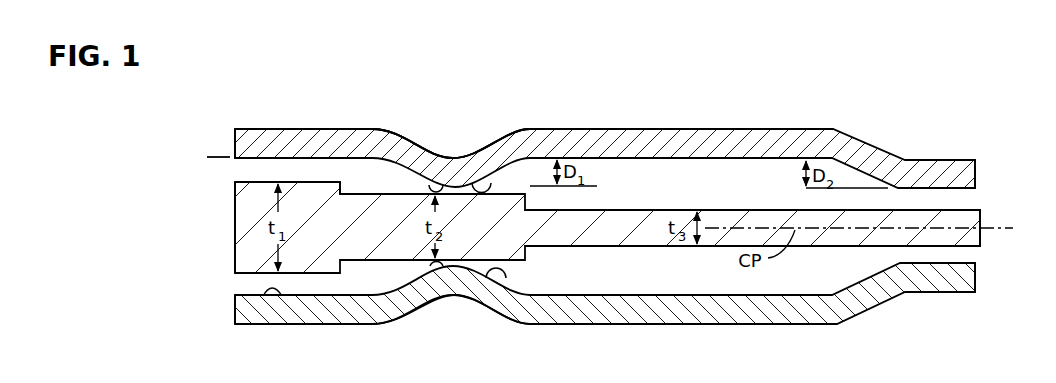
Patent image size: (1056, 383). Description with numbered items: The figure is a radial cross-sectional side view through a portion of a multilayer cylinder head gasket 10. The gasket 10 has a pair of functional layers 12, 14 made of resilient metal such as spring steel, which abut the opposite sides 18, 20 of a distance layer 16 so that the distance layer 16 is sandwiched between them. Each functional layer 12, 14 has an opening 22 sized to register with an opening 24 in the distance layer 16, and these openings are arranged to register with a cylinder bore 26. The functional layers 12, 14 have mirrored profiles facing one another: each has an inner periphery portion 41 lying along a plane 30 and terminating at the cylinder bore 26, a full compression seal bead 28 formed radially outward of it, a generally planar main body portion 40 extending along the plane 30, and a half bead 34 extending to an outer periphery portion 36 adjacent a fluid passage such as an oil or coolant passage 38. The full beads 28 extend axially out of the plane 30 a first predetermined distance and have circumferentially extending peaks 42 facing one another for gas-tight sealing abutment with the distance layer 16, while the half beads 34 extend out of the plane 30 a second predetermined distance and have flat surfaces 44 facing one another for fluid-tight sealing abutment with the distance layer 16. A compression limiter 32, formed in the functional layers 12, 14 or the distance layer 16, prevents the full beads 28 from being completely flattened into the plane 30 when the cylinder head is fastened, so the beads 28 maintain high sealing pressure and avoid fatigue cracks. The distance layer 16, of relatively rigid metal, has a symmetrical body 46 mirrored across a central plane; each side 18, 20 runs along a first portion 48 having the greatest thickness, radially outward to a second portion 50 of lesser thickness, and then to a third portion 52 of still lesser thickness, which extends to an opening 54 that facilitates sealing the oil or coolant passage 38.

The gasket 10 is at (802, 90).
The functional layer 12 is at (277, 129).
The functional layer 14 is at (288, 326).
The distance layer 16 is at (235, 208).
The side of distance layer 18 is at (254, 181).
The side of distance layer 20 is at (255, 276).
The opening 22 is at (235, 143).
The opening 24 is at (235, 250).
The cylinder bore 26 is at (153, 225).
The full compression seal bead 28 is at (496, 182).
The plane 30 is at (218, 156).
The compression limiter 32 is at (372, 104).
The half bead 34 is at (952, 160).
The outer periphery portion 36 is at (976, 160).
The oil or coolant passage 38 is at (1017, 265).
The main body portion 40 is at (640, 140).
The inner periphery portion 41 is at (289, 140).
The peak 42 is at (431, 185).
The flat surface 44 is at (950, 189).
The symmetrical body 46 is at (725, 199).
The first portion 48 is at (305, 182).
The second portion 50 is at (396, 192).
The third portion 52 is at (688, 210).
The opening 54 is at (981, 210).